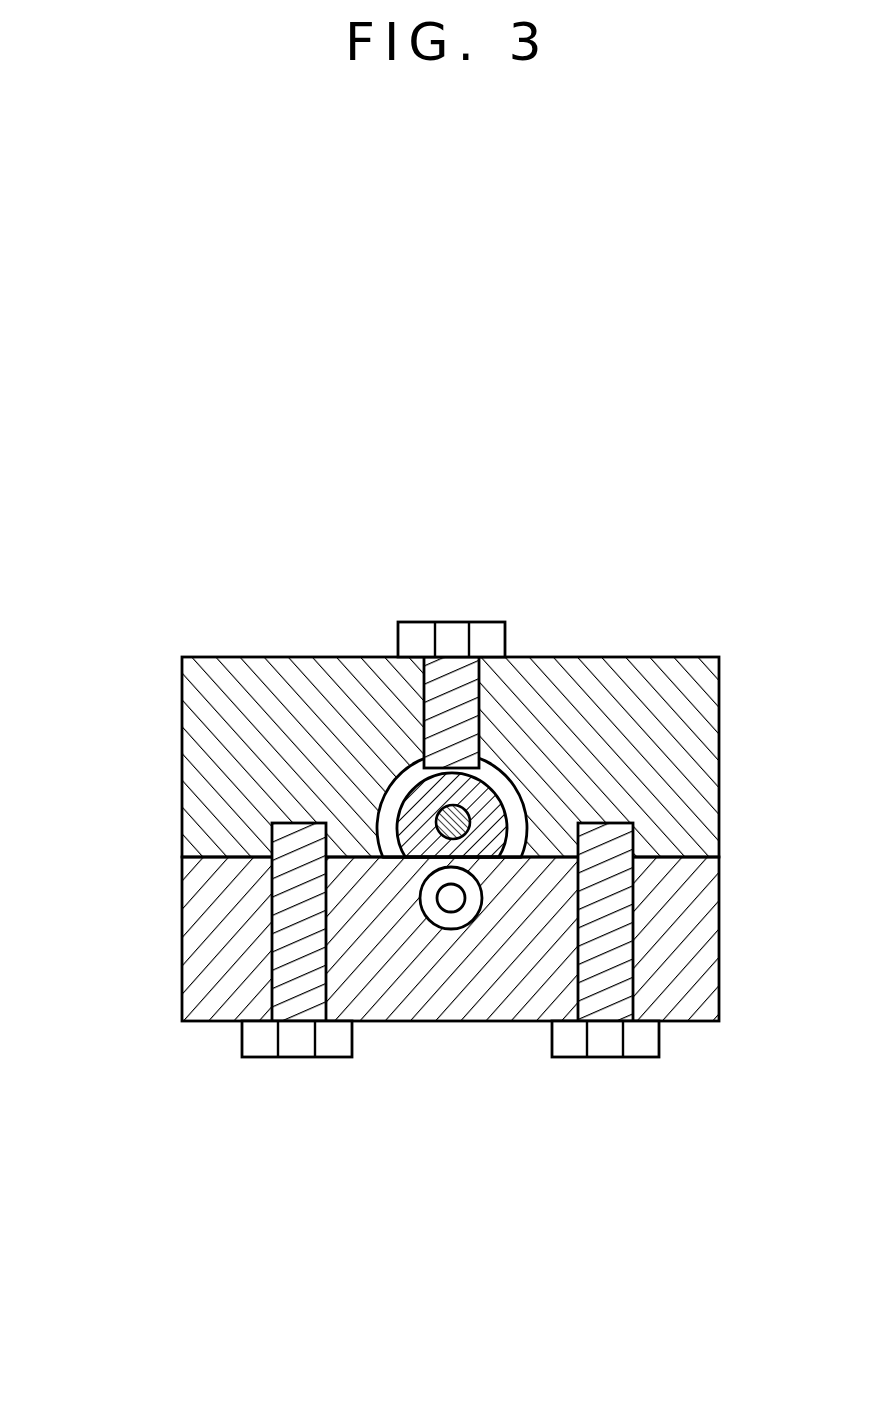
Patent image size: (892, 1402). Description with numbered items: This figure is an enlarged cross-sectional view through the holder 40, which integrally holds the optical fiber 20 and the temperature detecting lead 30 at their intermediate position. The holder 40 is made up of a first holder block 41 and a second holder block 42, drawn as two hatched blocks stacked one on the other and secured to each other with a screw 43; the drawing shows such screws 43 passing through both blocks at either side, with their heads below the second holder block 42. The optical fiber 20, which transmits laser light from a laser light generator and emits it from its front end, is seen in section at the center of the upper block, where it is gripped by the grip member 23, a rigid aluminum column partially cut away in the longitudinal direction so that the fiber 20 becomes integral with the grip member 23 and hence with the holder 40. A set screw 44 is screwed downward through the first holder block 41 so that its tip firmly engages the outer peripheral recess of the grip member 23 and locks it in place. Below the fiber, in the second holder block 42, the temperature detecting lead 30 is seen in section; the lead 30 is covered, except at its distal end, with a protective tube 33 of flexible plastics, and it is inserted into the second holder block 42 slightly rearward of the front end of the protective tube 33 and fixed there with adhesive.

The optical fiber 20 is at (437, 821).
The grip member 23 is at (480, 810).
The temperature detecting lead 30 is at (451, 900).
The protective tube 33 is at (451, 900).
The holder 40 is at (385, 797).
The first holder block 41 is at (255, 683).
The second holder block 42 is at (230, 973).
The screw 43 is at (283, 1038).
The set screw 44 is at (452, 633).